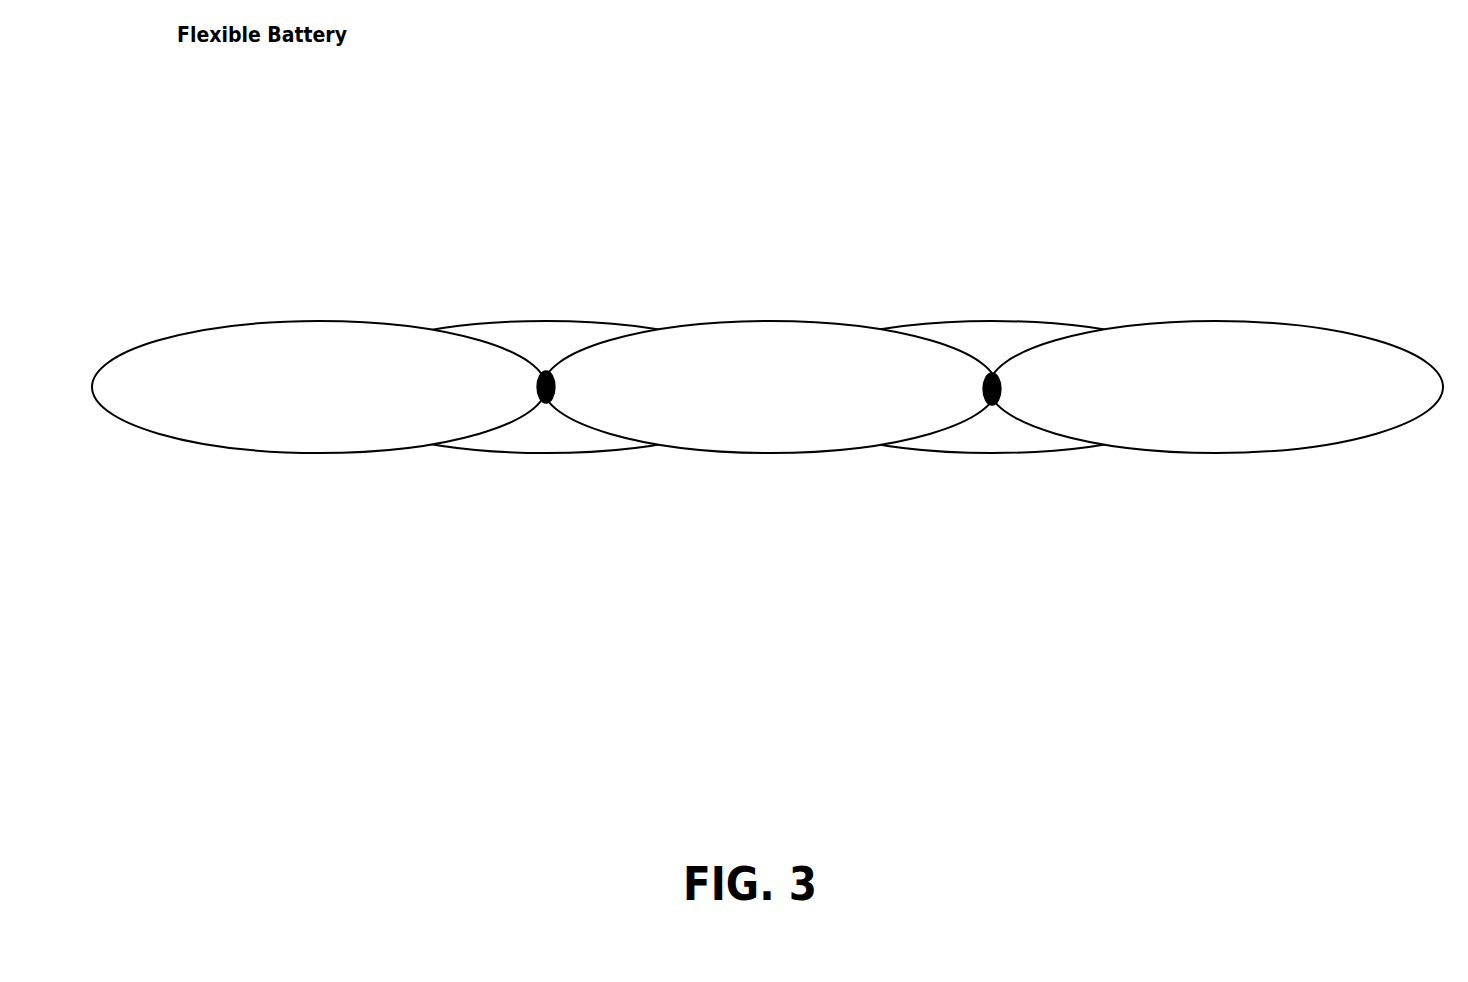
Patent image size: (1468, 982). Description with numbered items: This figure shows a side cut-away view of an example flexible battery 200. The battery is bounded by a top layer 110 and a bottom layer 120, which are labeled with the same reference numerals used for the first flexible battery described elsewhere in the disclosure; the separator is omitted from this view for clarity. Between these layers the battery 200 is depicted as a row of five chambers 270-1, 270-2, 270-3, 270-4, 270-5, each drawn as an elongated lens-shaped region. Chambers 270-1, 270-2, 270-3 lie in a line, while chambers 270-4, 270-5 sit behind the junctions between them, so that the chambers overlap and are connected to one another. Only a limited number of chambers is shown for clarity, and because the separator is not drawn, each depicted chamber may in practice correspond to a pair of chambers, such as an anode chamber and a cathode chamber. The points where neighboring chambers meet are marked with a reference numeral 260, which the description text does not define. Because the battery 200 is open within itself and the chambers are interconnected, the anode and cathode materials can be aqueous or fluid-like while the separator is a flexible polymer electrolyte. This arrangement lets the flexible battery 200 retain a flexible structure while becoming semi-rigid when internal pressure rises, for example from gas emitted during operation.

The flexible battery 200 is at (280, 73).
The top layer 110 is at (307, 322).
The bottom layer 120 is at (346, 452).
The connection points / joints 260 is at (990, 385).
The chamber 270-1 is at (345, 397).
The chamber 270-2 is at (812, 397).
The chamber 270-3 is at (1247, 397).
The chamber 270-4 is at (567, 446).
The chamber 270-5 is at (1026, 353).